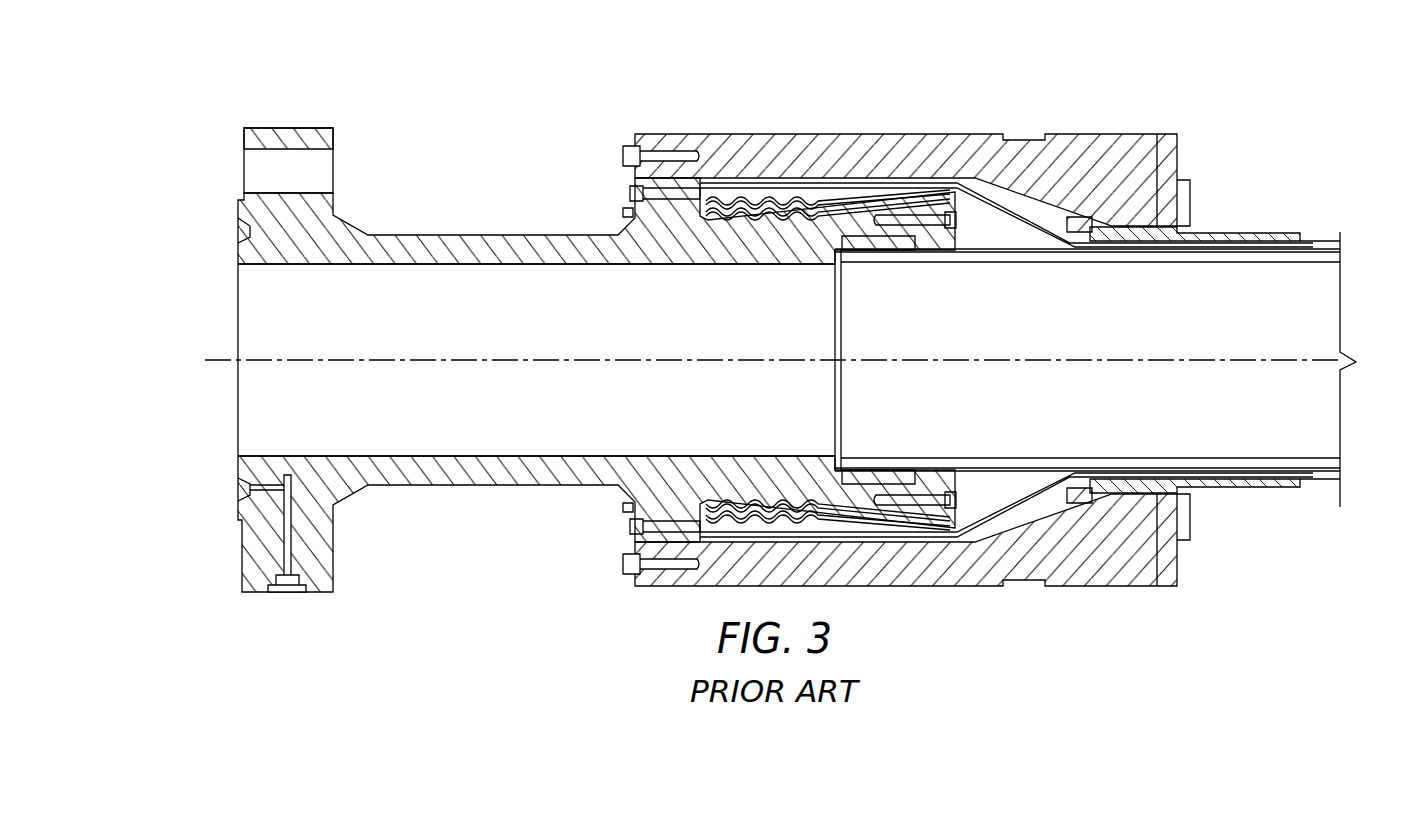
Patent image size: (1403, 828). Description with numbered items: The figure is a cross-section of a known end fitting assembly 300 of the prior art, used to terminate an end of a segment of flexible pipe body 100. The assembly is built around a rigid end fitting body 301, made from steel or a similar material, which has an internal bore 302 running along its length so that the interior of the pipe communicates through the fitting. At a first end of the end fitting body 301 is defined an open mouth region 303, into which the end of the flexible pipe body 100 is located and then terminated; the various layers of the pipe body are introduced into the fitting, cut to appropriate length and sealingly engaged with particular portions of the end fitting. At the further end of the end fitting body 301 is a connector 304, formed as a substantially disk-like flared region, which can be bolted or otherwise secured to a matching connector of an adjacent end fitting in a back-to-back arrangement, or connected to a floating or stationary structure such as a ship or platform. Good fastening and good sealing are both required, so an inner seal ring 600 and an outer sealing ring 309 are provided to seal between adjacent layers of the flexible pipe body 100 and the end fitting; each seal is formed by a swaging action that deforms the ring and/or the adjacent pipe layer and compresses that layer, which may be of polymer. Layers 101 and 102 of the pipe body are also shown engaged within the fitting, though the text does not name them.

The end fitting assembly 300 is at (594, 82).
The end fitting body 301 is at (469, 233).
The internal bore 302 is at (489, 344).
The open mouth region 303 is at (812, 311).
The connector 304 is at (334, 131).
The inner seal ring 600 is at (903, 256).
The outer sheet layer 101 is at (1034, 258).
The inner liner 102 is at (861, 465).
The outer sealing ring 309 is at (1152, 246).
The flexible pipe body 100 is at (1320, 490).